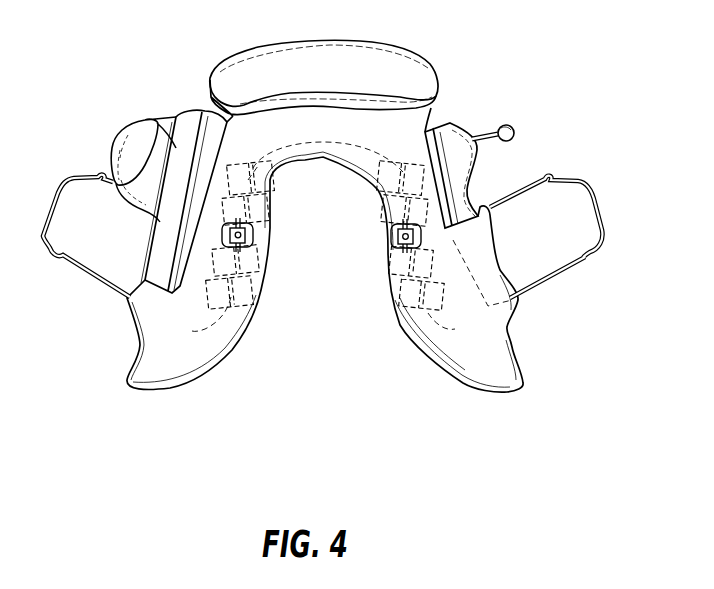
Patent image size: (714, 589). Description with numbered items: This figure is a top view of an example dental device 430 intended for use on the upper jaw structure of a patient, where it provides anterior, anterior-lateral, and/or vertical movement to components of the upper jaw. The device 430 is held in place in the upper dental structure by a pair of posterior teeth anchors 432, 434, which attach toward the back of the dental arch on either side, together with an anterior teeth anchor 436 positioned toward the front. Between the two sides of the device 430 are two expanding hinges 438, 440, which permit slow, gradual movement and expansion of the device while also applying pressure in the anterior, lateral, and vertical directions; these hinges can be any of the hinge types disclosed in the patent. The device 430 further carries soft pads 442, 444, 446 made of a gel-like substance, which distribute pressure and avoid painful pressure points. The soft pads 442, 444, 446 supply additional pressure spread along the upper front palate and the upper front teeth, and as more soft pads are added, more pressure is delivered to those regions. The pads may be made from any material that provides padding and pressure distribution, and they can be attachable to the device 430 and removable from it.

The device 430 is at (490, 382).
The posterior teeth anchor 432 is at (551, 278).
The posterior teeth anchor 434 is at (88, 273).
The anterior teeth anchor 436 is at (516, 128).
The expanding hinge 438 is at (250, 240).
The expanding hinge 440 is at (392, 237).
The soft pad 442 is at (178, 148).
The soft pad 444 is at (455, 133).
The soft pad 446 is at (345, 56).